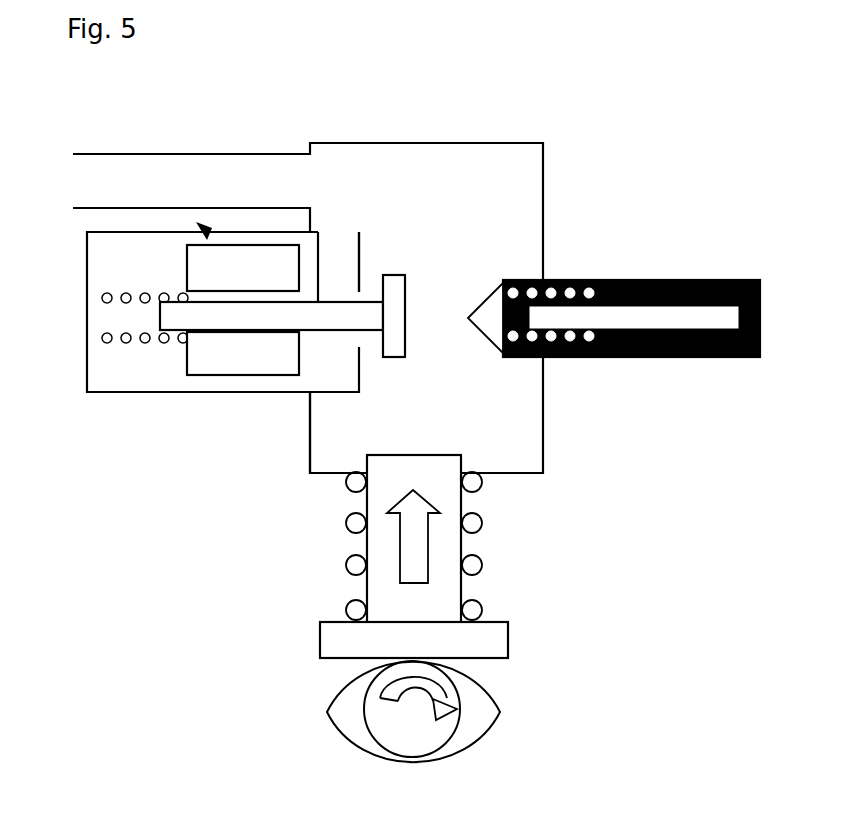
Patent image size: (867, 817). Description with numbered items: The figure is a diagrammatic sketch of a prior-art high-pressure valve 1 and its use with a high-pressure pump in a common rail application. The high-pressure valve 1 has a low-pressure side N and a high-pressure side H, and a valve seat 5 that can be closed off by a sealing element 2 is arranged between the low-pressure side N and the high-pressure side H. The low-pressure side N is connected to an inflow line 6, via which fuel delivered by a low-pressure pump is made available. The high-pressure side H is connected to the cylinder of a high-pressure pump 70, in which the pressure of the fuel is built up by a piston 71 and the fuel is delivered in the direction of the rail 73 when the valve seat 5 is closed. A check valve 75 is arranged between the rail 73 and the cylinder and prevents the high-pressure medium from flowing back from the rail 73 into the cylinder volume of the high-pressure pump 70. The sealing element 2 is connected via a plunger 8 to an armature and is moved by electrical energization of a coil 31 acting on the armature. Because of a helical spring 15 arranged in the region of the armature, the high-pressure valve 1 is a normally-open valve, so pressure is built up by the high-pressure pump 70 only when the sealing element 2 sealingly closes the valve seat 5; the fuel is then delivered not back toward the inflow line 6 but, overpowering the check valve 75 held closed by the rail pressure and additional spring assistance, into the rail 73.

The high-pressure valve 1 is at (205, 236).
The sealing element 2 is at (408, 305).
The valve seat 5 is at (368, 277).
The inflow line 6 is at (292, 172).
The plunger 8 is at (208, 317).
The helical spring 15 is at (127, 350).
The coil 31 is at (242, 358).
The high-pressure pump 70 is at (510, 417).
The piston 71 is at (442, 565).
The rail 73 is at (687, 283).
The check valve 75 is at (548, 270).
The high-pressure side H is at (385, 370).
The low-pressure side N is at (343, 210).